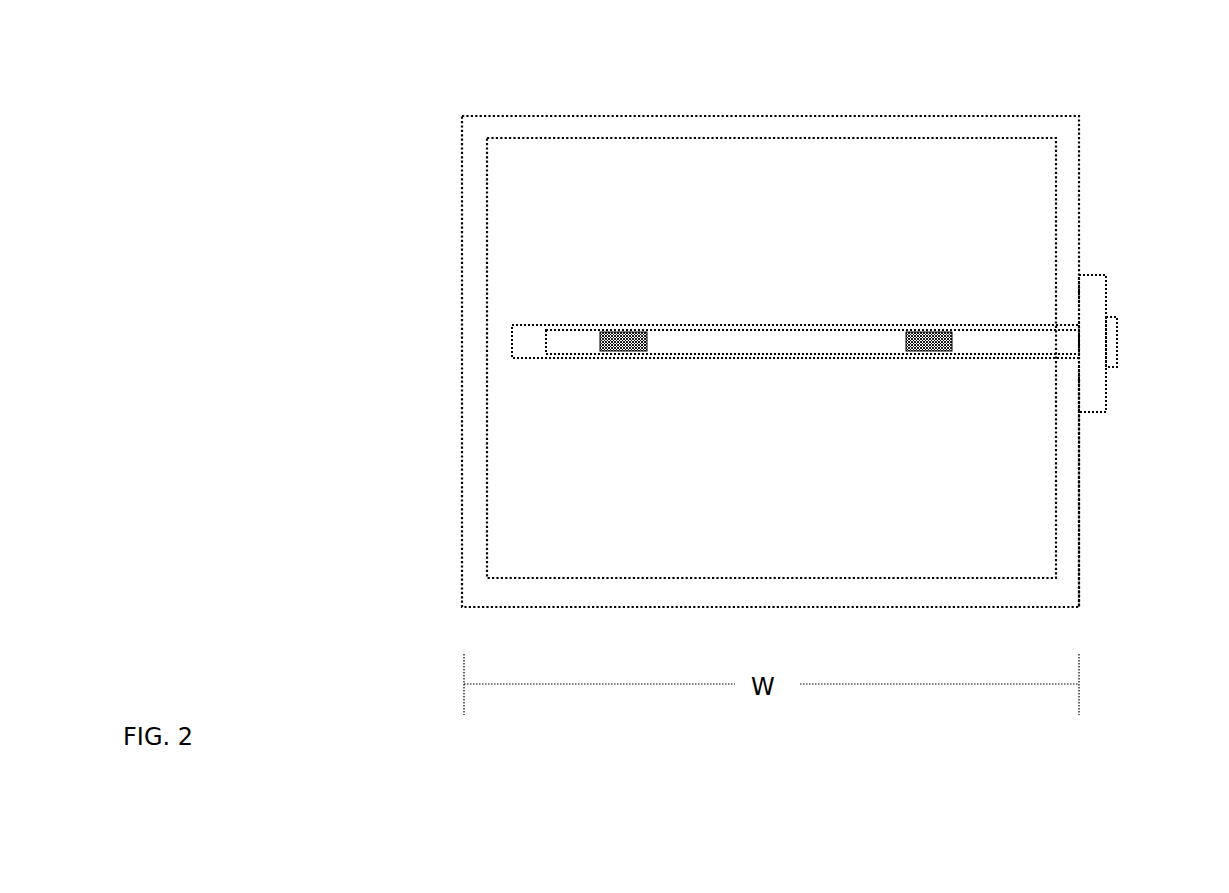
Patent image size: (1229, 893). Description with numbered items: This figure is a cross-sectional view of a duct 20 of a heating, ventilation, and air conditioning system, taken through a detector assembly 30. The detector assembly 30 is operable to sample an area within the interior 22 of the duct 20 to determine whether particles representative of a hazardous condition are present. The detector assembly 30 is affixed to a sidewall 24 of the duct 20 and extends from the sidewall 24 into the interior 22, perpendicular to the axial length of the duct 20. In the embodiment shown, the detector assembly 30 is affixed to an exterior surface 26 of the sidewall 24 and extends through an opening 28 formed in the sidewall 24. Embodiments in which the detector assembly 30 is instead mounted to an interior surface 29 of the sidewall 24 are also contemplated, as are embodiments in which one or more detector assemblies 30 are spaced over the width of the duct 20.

The duct 20 is at (794, 339).
The interior 22 is at (795, 290).
The sidewall 24 is at (1063, 527).
The exterior surface 26 is at (1080, 492).
The opening 28 is at (1067, 323).
The interior surface 29 is at (1057, 490).
The detector assembly 30 is at (632, 326).